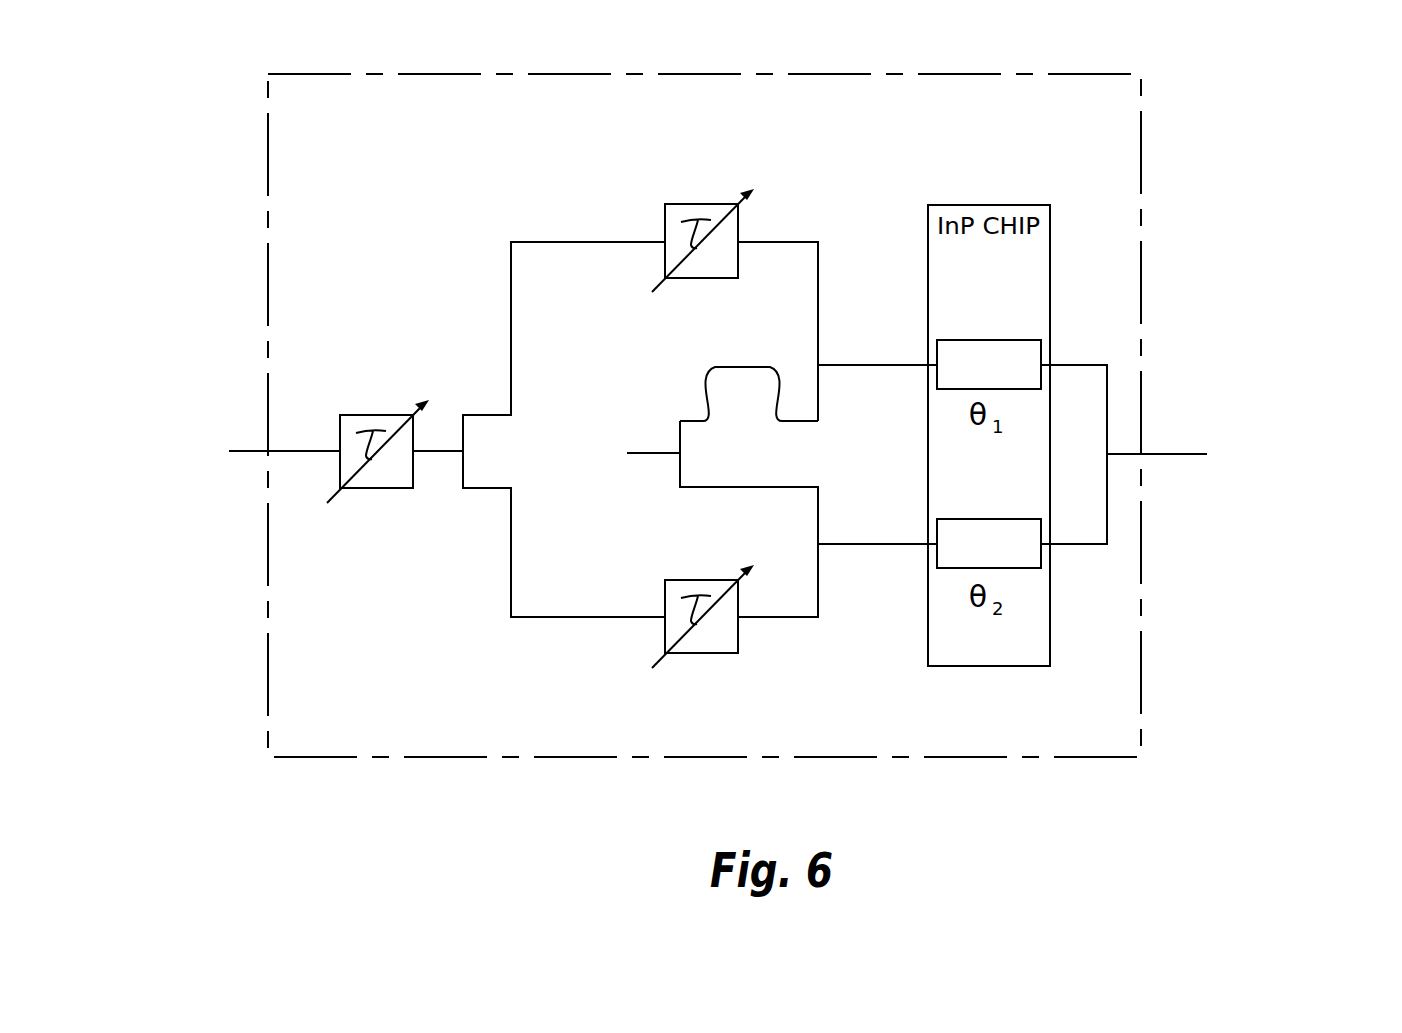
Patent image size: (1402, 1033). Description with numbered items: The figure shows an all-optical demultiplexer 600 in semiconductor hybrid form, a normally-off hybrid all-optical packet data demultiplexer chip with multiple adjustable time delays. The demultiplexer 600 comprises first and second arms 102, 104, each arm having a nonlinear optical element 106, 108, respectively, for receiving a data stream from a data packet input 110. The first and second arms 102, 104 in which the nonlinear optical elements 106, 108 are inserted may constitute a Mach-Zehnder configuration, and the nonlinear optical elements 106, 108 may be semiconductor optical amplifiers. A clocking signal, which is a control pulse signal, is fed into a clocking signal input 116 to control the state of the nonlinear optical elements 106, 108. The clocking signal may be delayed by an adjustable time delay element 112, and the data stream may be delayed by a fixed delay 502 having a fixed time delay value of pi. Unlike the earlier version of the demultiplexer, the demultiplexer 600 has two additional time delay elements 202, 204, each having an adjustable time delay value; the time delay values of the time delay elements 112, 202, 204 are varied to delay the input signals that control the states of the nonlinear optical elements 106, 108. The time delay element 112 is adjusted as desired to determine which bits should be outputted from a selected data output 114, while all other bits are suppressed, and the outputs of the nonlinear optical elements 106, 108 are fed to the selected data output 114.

The all-optical demultiplexer 600 is at (238, 225).
The clocking signal input 116 is at (252, 452).
The time delay element 202 is at (377, 417).
The time delay element 204 is at (703, 205).
The time delay element 112 is at (700, 580).
The data packet input 110 is at (650, 454).
The fixed delay 502 is at (710, 368).
The first arm 102 is at (836, 366).
The second arm 104 is at (838, 545).
The nonlinear optical element 106 is at (958, 340).
The nonlinear optical element 108 is at (952, 568).
The selected data output 114 is at (1160, 455).